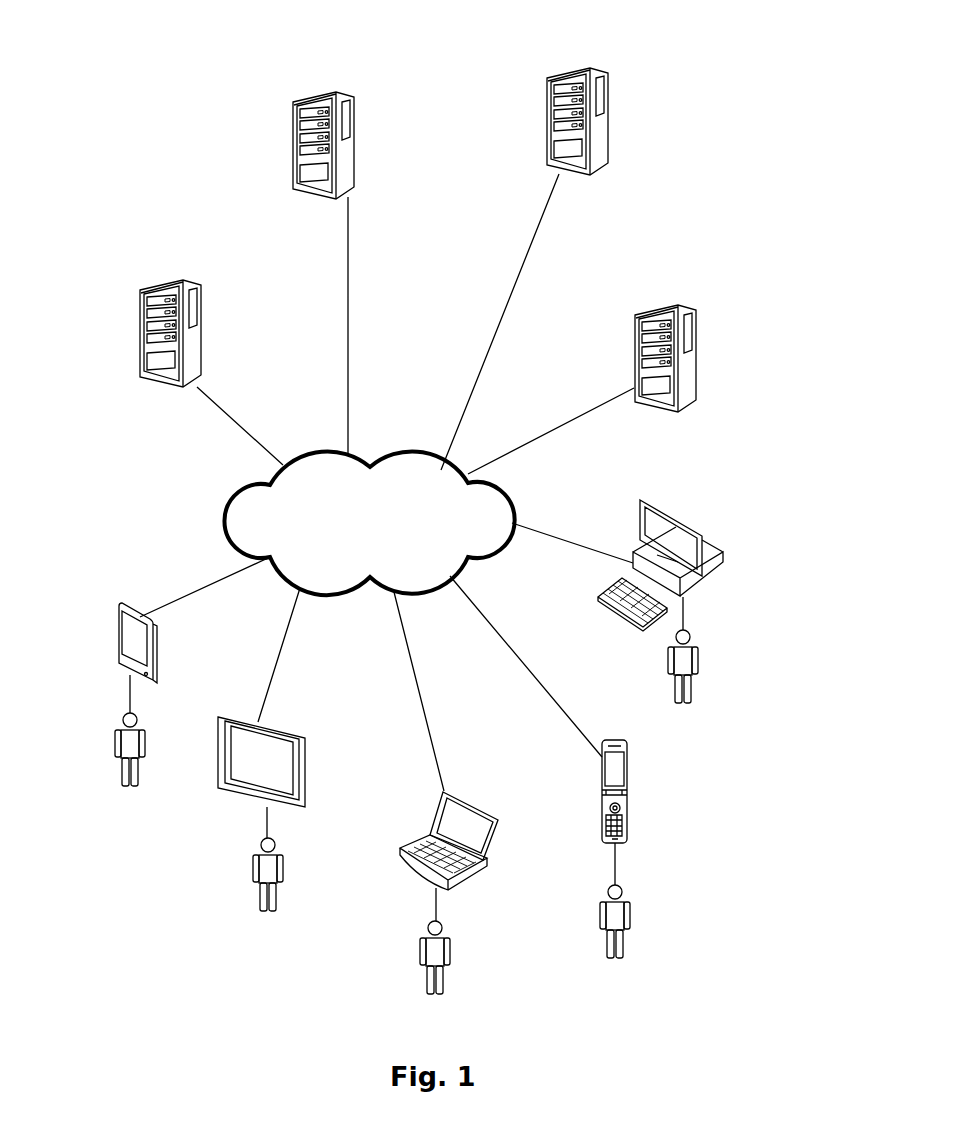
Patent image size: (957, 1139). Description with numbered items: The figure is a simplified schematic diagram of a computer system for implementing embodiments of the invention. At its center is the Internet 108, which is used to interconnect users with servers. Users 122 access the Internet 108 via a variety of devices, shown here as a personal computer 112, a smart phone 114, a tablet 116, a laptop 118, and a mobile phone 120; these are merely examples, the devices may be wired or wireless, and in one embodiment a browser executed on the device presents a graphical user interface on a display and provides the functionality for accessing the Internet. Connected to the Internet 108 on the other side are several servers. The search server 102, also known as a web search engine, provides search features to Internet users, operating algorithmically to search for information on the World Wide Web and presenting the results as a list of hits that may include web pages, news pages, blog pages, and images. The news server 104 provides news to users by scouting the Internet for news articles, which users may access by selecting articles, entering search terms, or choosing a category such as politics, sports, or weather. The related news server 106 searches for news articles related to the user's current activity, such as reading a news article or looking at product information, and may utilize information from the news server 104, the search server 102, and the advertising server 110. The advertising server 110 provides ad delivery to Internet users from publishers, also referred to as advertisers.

The search server 102 is at (148, 348).
The news server 104 is at (600, 134).
The related news server 106 is at (346, 158).
The Internet 108 is at (238, 516).
The advertising server 110 is at (693, 383).
The personal computer 112 is at (722, 565).
The smart phone 114 is at (143, 640).
The tablet 116 is at (290, 761).
The laptop 118 is at (478, 838).
The mobile phone 120 is at (620, 768).
The users 122 is at (138, 785).